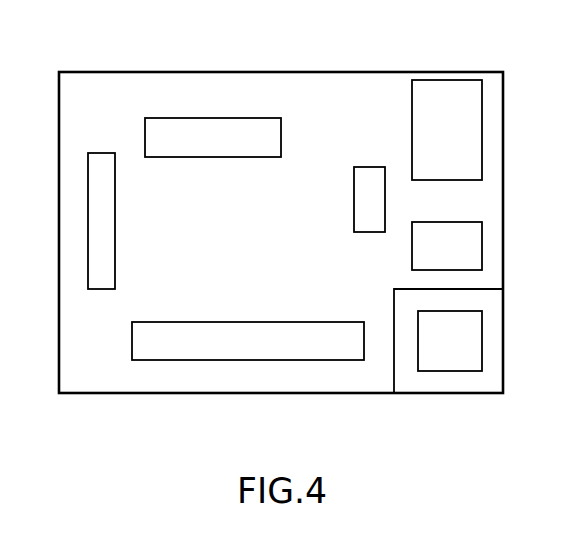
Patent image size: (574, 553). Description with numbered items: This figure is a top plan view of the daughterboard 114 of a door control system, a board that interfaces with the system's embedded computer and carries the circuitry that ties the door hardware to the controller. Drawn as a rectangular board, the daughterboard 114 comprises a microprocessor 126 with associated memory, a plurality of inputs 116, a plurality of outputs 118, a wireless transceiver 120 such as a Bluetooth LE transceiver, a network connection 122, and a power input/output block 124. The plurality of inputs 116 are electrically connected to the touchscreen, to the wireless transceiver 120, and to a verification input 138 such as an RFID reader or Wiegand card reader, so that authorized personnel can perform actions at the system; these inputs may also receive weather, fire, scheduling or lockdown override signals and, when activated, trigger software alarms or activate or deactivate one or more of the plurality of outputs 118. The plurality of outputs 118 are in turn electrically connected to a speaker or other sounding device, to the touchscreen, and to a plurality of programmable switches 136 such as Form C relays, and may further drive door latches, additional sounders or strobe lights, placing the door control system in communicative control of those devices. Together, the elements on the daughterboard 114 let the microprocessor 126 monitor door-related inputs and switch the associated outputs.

The daughterboard 114 is at (257, 80).
The plurality of inputs 116 is at (198, 128).
The plurality of outputs 118 is at (225, 128).
The wireless transceiver 120 is at (470, 120).
The network connection 122 is at (473, 332).
The power input/output block 124 is at (97, 223).
The microprocessor 126 is at (470, 245).
The programmable switches 136 is at (270, 127).
The verification input 138 is at (377, 197).